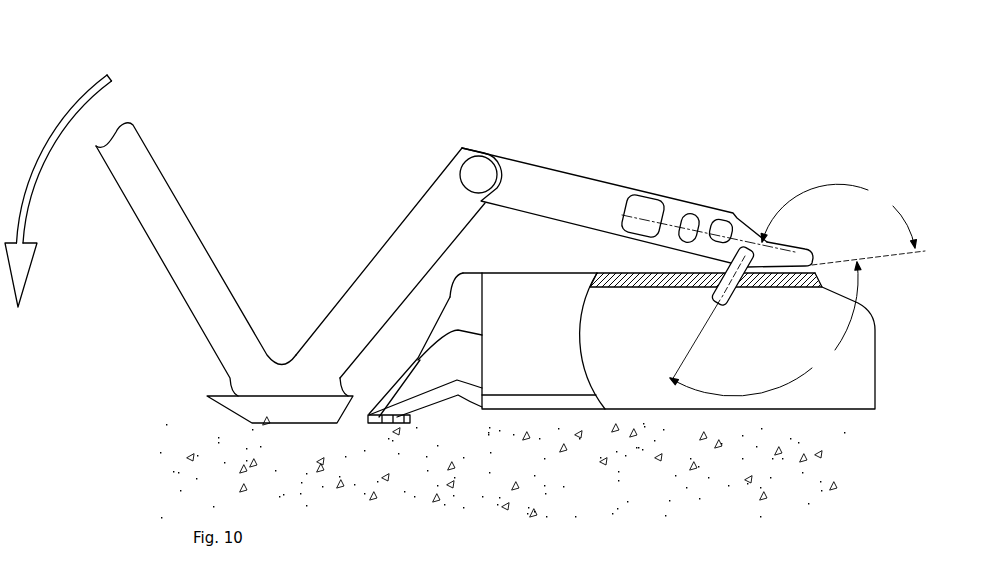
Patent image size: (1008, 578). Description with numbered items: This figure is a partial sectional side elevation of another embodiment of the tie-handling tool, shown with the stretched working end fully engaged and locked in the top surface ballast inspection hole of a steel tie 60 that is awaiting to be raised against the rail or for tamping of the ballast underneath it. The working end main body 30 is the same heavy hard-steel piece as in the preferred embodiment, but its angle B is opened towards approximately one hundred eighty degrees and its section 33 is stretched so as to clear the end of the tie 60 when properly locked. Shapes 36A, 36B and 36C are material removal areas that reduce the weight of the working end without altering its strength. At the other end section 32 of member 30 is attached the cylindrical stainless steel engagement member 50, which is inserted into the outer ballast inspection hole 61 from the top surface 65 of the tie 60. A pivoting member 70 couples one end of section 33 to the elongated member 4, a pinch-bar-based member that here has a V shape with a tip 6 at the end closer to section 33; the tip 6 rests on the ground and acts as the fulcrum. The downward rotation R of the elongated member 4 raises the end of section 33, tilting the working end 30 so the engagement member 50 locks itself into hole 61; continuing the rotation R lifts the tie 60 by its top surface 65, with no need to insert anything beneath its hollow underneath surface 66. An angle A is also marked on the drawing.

The elongated member 4 is at (183, 273).
The tip 6 is at (207, 396).
The working end main body 30 is at (616, 165).
The other end section of working end 32 is at (792, 258).
The section of working end 33 is at (570, 202).
The material removal area 36A is at (648, 210).
The material removal area 36B is at (695, 224).
The material removal area 36C is at (725, 225).
The engagement member 50 is at (741, 312).
The tie 60 is at (621, 323).
The outer ballast inspection hole 61 is at (750, 278).
The top surface 65 is at (563, 272).
The underneath surface 66 is at (622, 288).
The pivoting member 70 is at (468, 171).
The angle A is at (765, 329).
The angle B is at (843, 224).
The downward rotation R is at (58, 193).